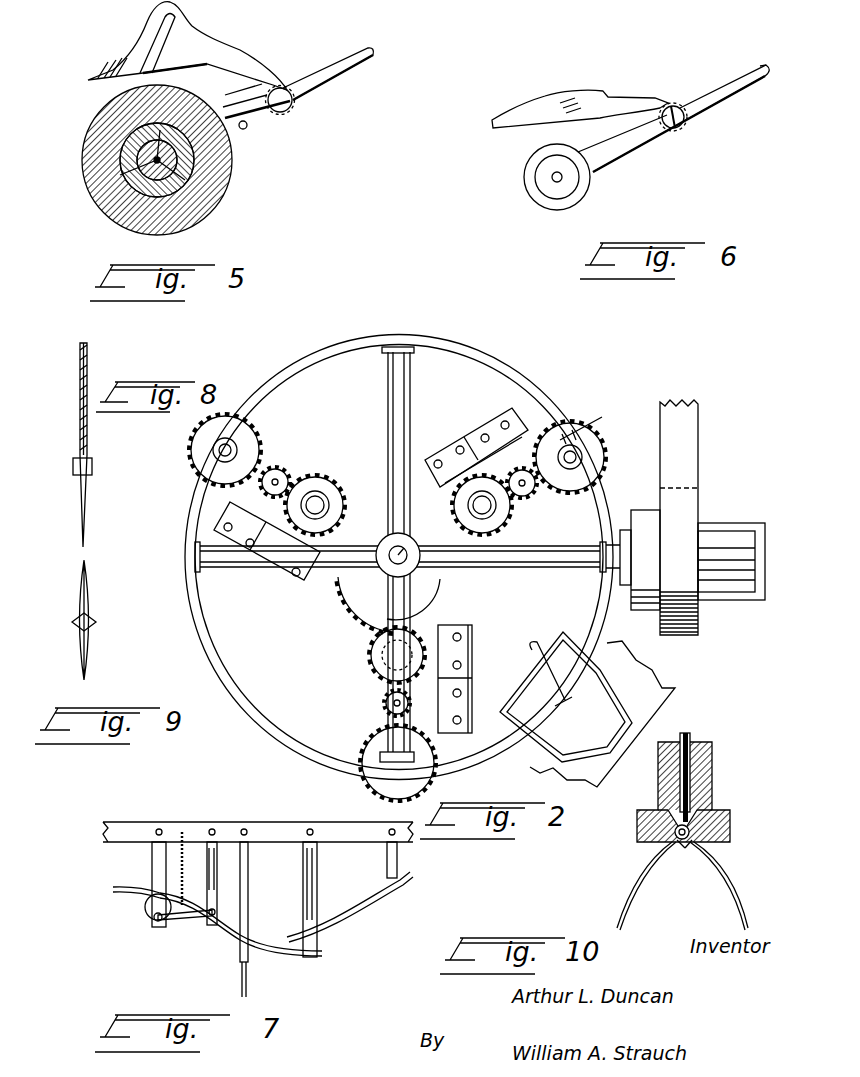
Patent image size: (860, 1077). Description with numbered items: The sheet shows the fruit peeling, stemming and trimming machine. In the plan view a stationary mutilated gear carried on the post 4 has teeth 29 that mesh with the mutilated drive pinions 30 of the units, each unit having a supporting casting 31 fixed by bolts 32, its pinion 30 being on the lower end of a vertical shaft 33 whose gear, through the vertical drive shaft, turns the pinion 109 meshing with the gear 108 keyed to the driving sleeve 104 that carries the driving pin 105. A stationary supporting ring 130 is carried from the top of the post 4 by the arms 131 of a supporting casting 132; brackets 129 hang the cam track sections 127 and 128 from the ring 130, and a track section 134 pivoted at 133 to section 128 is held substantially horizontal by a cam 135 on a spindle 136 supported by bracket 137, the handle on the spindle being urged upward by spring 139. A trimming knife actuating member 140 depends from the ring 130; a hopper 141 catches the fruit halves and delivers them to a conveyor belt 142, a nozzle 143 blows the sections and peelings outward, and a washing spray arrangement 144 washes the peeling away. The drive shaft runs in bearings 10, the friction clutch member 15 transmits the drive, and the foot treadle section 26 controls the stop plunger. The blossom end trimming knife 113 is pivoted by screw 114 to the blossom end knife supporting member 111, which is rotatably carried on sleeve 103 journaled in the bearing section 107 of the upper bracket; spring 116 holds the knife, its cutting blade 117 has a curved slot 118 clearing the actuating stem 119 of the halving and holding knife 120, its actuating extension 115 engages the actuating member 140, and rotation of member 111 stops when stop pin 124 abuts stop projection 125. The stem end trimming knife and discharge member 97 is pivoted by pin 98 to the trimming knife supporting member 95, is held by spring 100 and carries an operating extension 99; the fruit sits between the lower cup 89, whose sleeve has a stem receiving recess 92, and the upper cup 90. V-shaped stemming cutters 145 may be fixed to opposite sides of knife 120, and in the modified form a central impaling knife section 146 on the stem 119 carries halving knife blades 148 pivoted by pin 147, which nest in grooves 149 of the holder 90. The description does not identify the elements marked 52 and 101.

In FIG. 2, the post 4 is at (405, 552).
In FIG. 2, the bearing 10 is at (725, 530).
In FIG. 2, the friction clutch member 15 is at (695, 460).
In FIG. 2, the foot treadle section 26 is at (452, 578).
In FIG. 2, the teeth 29 is at (345, 628).
In FIG. 2, the mutilated drive pinion 30 is at (320, 490).
In FIG. 2, the supporting casting 31 is at (468, 432).
In FIG. 2, the bolt 32 is at (440, 455).
In FIG. 2, the shaft 33 is at (328, 505).
In FIG. 2, the bracket plate 52 is at (215, 540).
In FIG. 6, the lower supporting cup 89 is at (565, 182).
In FIG. 10, the upper cup 90 is at (732, 832).
In FIG. 6, the stem receiving recess 92 is at (550, 183).
In FIG. 6, the trimming knife supporting member 95 is at (624, 145).
In FIG. 6, the stem end trimming knife and discharge member 97 is at (628, 100).
In FIG. 6, the pin 98 is at (670, 102).
In FIG. 6, the operating extension 99 is at (732, 95).
In FIG. 6, the spring 100 is at (672, 128).
In FIG. 6, the blade tip 101 is at (530, 112).
In FIG. 5, the sleeve 103 is at (215, 205).
In FIG. 5, the driving sleeve 104 is at (238, 165).
In FIG. 10, the driving pin 105 is at (712, 775).
In FIG. 5, the bearing section 107 is at (83, 164).
In FIG. 2, the gear 108 is at (195, 455).
In FIG. 2, the pinion 109 is at (280, 468).
In FIG. 5, the blossom end knife supporting member 111 is at (282, 112).
In FIG. 5, the blossom end trimming knife 113 is at (276, 72).
In FIG. 5, the screw 114 is at (300, 72).
In FIG. 5, the actuating extension 115 is at (355, 60).
In FIG. 5, the spring 116 is at (262, 100).
In FIG. 5, the cutting blade 117 is at (104, 100).
In FIG. 5, the curved slot 118 is at (152, 56).
In FIG. 5, the actuating stem 119 is at (100, 195).
In FIG. 8, the actuating stem 119 is at (90, 378).
In FIG. 10, the actuating stem 119 is at (712, 752).
In FIG. 8, the halving and holding knife 120 is at (90, 505).
In FIG. 9, the halving and holding knife 120 is at (92, 648).
In FIG. 5, the stop pin 124 is at (226, 104).
In FIG. 5, the stop projection 125 is at (250, 128).
In FIG. 7, the cam track section 127 is at (375, 893).
In FIG. 7, the cam track section 128 is at (258, 942).
In FIG. 7, the bracket 129 is at (213, 857).
In FIG. 2, the stationary supporting ring 130 is at (292, 745).
In FIG. 7, the stationary supporting ring 130 is at (272, 835).
In FIG. 2, the arm 131 is at (412, 400).
In FIG. 2, the supporting casting 132 is at (375, 542).
In FIG. 7, the pivot 133 is at (212, 905).
In FIG. 7, the track section 134 is at (113, 887).
In FIG. 7, the cam 135 is at (148, 910).
In FIG. 7, the spindle 136 is at (182, 925).
In FIG. 7, the bracket 137 is at (150, 856).
In FIG. 7, the spring 139 is at (190, 832).
In FIG. 7, the trimming knife actuating member 140 is at (247, 968).
In FIG. 2, the hopper 141 is at (518, 692).
In FIG. 2, the conveyor belt 142 is at (668, 697).
In FIG. 2, the nozzle 143 is at (528, 650).
In FIG. 2, the washing spray arrangement 144 is at (600, 418).
In FIG. 8, the V-shaped stemming cutter 145 is at (95, 462).
In FIG. 9, the V-shaped stemming cutter 145 is at (96, 620).
In FIG. 10, the central impaling knife section 146 is at (676, 852).
In FIG. 10, the pin 147 is at (690, 852).
In FIG. 10, the halving knife blade 148 is at (745, 885).
In FIG. 10, the groove 149 is at (660, 808).